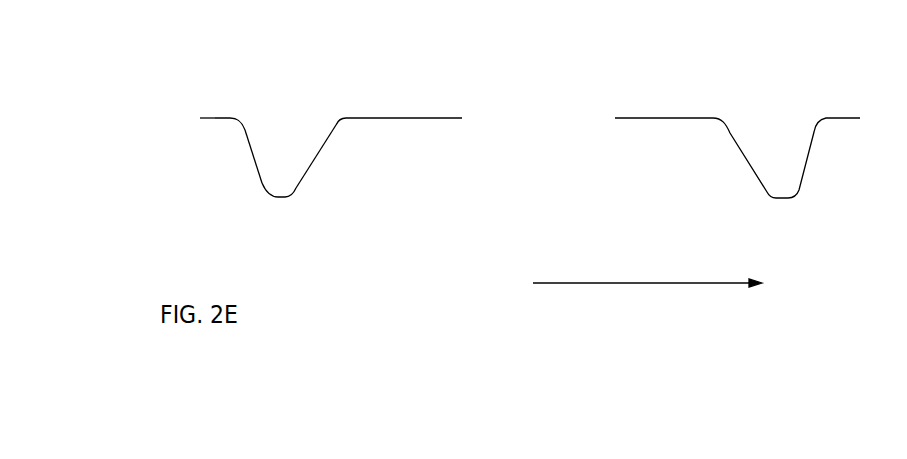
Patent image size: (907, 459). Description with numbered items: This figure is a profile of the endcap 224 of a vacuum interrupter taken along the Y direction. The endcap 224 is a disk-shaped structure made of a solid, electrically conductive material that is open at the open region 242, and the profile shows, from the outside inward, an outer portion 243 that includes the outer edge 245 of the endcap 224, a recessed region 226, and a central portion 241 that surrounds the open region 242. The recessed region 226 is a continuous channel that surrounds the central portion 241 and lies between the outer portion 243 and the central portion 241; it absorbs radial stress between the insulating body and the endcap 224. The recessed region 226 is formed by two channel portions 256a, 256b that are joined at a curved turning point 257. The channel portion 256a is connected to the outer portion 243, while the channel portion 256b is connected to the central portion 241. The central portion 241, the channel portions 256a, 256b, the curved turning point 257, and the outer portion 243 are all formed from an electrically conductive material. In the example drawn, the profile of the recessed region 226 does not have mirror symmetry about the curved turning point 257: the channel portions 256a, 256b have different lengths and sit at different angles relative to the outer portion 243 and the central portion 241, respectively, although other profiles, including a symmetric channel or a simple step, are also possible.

The endcap 224 is at (888, 57).
The recessed region 226 is at (279, 146).
The central portion 241 is at (378, 118).
The open region 242 is at (545, 112).
The outer portion 243 is at (217, 118).
The outer edge 245 is at (202, 118).
The channel portion 256a is at (250, 152).
The channel portion 256b is at (305, 173).
The curved turning point 257 is at (275, 198).